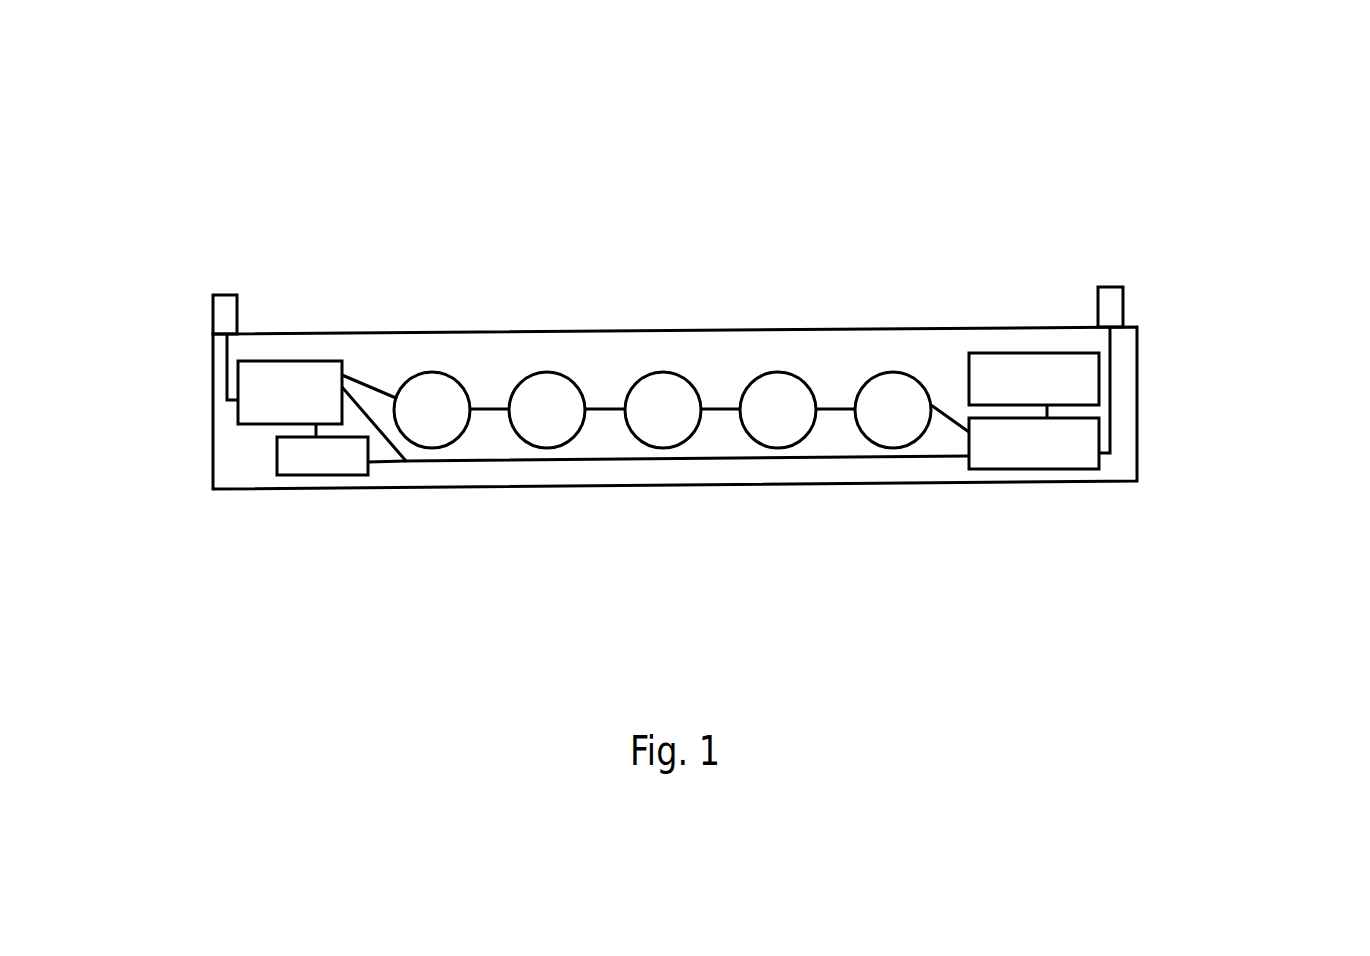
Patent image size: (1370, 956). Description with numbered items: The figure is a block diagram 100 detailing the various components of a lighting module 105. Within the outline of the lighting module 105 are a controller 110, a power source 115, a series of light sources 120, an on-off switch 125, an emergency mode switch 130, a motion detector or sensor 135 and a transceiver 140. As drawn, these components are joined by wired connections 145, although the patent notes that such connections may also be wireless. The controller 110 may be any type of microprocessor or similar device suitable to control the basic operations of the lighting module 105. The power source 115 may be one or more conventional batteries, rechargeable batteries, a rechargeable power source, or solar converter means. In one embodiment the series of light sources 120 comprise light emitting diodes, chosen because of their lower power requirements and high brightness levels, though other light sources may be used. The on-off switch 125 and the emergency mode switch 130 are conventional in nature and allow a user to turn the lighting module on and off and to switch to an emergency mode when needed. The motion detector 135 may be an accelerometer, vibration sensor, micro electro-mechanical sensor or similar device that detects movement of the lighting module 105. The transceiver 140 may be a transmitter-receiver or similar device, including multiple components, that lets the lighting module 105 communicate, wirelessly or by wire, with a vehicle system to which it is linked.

The block diagram 100 is at (1096, 157).
The lighting module 105 is at (342, 307).
The controller 110 is at (253, 427).
The power source 115 is at (1087, 470).
The series of light sources 120 is at (830, 357).
The on-off switch 125 is at (1152, 300).
The emergency mode switch 130 is at (202, 308).
The motion detector 135 is at (1125, 377).
The transceiver 140 is at (355, 477).
The wired connections 145 is at (945, 392).